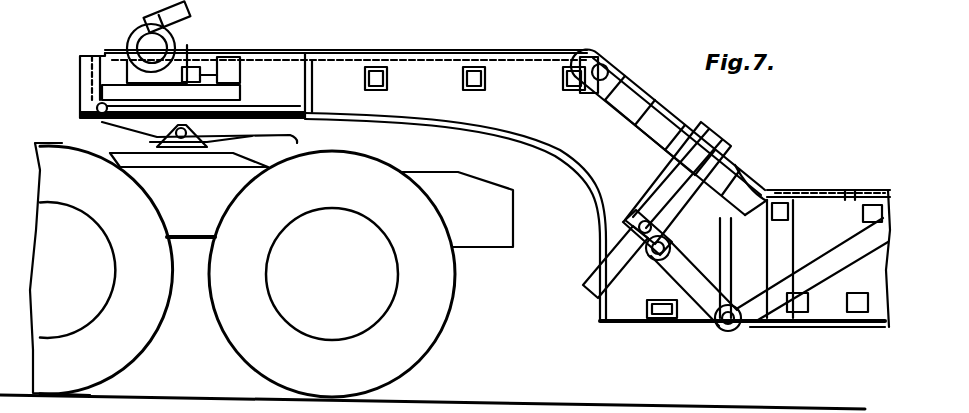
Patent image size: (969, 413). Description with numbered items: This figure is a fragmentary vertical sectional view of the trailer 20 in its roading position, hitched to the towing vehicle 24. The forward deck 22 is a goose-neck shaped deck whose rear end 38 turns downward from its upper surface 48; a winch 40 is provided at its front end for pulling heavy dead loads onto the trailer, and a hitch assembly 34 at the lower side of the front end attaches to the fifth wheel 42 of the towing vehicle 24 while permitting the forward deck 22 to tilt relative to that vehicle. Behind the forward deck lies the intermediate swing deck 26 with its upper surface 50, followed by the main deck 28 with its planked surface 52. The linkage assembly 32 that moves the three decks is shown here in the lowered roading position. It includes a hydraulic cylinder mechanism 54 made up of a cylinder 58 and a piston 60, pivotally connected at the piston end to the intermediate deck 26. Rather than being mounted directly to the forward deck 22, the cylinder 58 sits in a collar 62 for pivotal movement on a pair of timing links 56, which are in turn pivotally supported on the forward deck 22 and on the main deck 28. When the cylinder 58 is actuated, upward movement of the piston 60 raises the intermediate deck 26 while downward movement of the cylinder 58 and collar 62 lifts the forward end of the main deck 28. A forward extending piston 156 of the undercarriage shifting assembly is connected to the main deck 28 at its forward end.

The trailer 20 is at (813, 130).
The forward deck 22 is at (412, 68).
The towing vehicle 24 is at (477, 252).
The intermediate swing deck 26 is at (625, 82).
The main deck 28 is at (820, 200).
The linkage assembly 32 is at (702, 326).
The hitch assembly 34 is at (258, 96).
The rear end 38 is at (633, 316).
The winch 40 is at (187, 33).
The fifth wheel 42 is at (297, 143).
The upper surface 48 is at (487, 53).
The upper surface 50 is at (736, 166).
The surface 52 is at (858, 190).
The hydraulic cylinder mechanism 54 is at (596, 267).
The timing links 56 is at (683, 263).
The cylinder 58 is at (586, 290).
The piston 60 is at (690, 127).
The collar 62 is at (616, 210).
The forward extending piston 156 is at (873, 263).